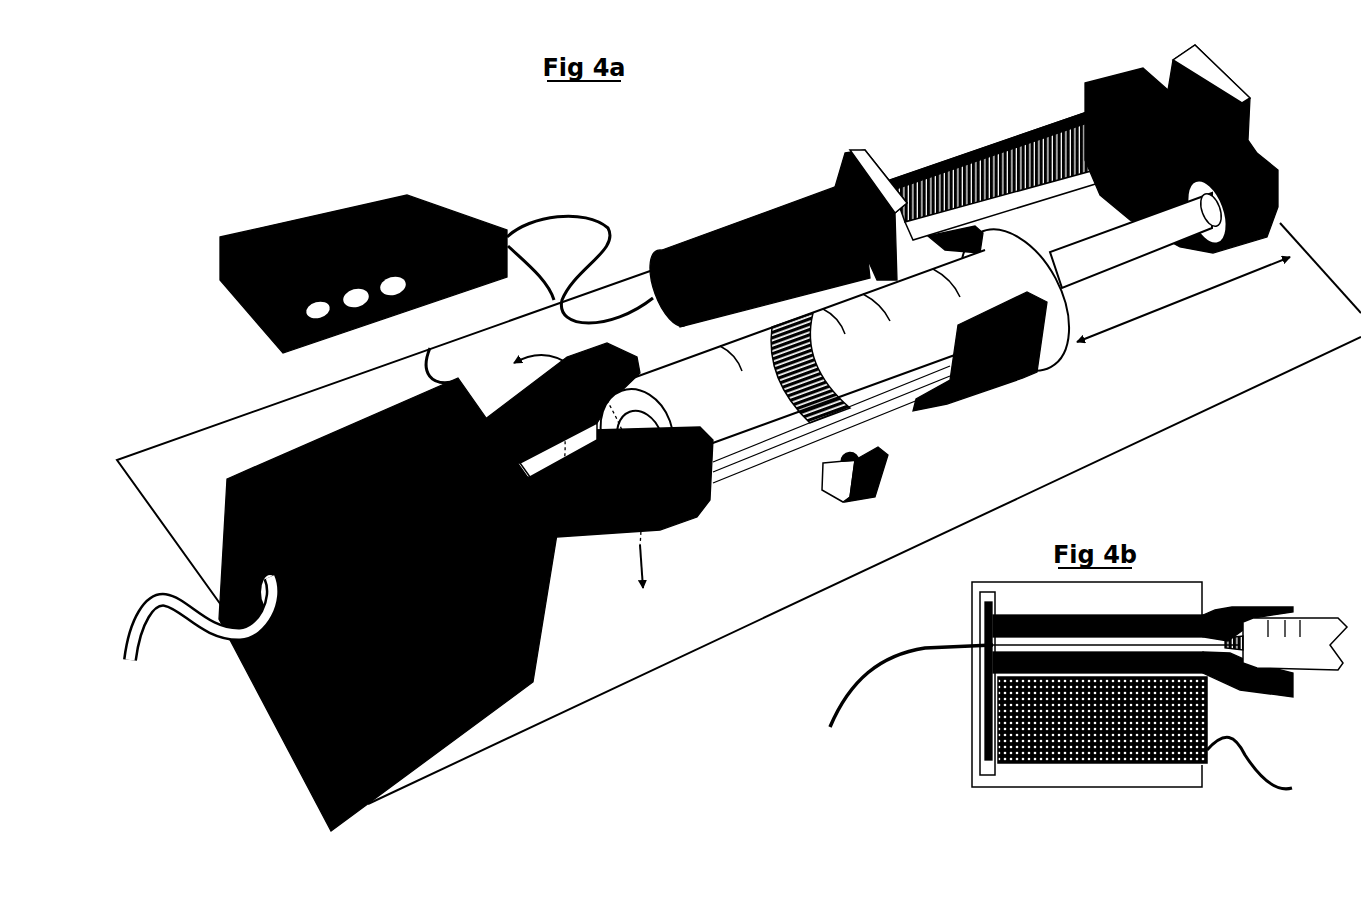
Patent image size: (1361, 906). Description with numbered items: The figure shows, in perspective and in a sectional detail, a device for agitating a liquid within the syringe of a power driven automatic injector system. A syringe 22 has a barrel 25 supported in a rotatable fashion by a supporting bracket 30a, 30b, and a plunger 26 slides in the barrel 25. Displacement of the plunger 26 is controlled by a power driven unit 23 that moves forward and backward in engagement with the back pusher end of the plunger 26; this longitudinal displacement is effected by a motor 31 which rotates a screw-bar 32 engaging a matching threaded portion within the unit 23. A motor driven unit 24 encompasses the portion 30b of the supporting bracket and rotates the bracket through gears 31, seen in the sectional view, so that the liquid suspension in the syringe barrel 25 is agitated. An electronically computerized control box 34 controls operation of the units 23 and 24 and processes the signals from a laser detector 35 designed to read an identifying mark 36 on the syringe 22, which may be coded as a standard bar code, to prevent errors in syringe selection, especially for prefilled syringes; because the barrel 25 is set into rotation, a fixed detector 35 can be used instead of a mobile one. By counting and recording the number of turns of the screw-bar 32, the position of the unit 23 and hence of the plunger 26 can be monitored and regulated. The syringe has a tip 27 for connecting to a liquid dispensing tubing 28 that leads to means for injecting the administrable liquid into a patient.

In FIG. 4A, the syringe 22 is at (845, 347).
In FIG. 4A, the power driven unit 23 is at (1181, 149).
In FIG. 4A, the motor driven unit 24 is at (389, 604).
In FIG. 4B, the motor driven unit 24 is at (1098, 764).
In FIG. 4A, the barrel 25 is at (752, 433).
In FIG. 4A, the plunger 26 is at (1142, 231).
In FIG. 4B, the tip 27 is at (1242, 636).
In FIG. 4A, the liquid dispensing tubing 28 is at (155, 614).
In FIG. 4B, the liquid dispensing tubing 28 is at (887, 673).
In FIG. 4A, the bracket portion 30a is at (980, 351).
In FIG. 4A, the bracket portion 30b is at (598, 440).
In FIG. 4A, the motor 31 is at (755, 258).
In FIG. 4B, the motor 31 is at (983, 693).
In FIG. 4A, the screw-bar 32 is at (1012, 140).
In FIG. 4A, the control box 34 is at (363, 274).
In FIG. 4A, the laser detector 35 is at (877, 480).
In FIG. 4A, the identifying mark 36 is at (792, 372).